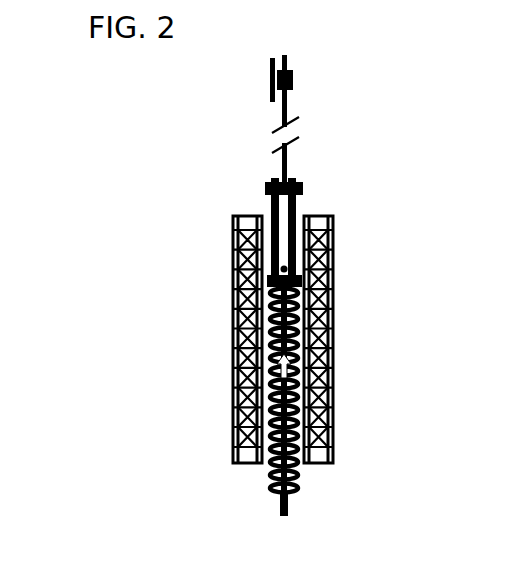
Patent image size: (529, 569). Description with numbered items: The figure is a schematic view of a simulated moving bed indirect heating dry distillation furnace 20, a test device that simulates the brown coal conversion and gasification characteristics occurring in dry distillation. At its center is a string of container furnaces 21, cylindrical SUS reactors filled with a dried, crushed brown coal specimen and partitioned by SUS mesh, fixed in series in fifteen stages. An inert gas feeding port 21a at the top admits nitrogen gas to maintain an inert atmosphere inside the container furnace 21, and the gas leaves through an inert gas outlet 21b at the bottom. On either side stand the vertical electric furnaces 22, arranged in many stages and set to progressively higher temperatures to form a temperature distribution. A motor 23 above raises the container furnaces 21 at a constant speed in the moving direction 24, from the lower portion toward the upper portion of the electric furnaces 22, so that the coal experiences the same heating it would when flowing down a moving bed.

The simulated moving bed indirect heating dry distillation furnace 20 is at (402, 195).
The container furnace 21 is at (300, 342).
The inert gas feeding port 21a is at (302, 275).
The inert gas outlet 21b is at (287, 504).
The electric furnace 22 is at (333, 393).
The motor 23 is at (270, 88).
The moving direction of the container furnace 24 is at (272, 362).